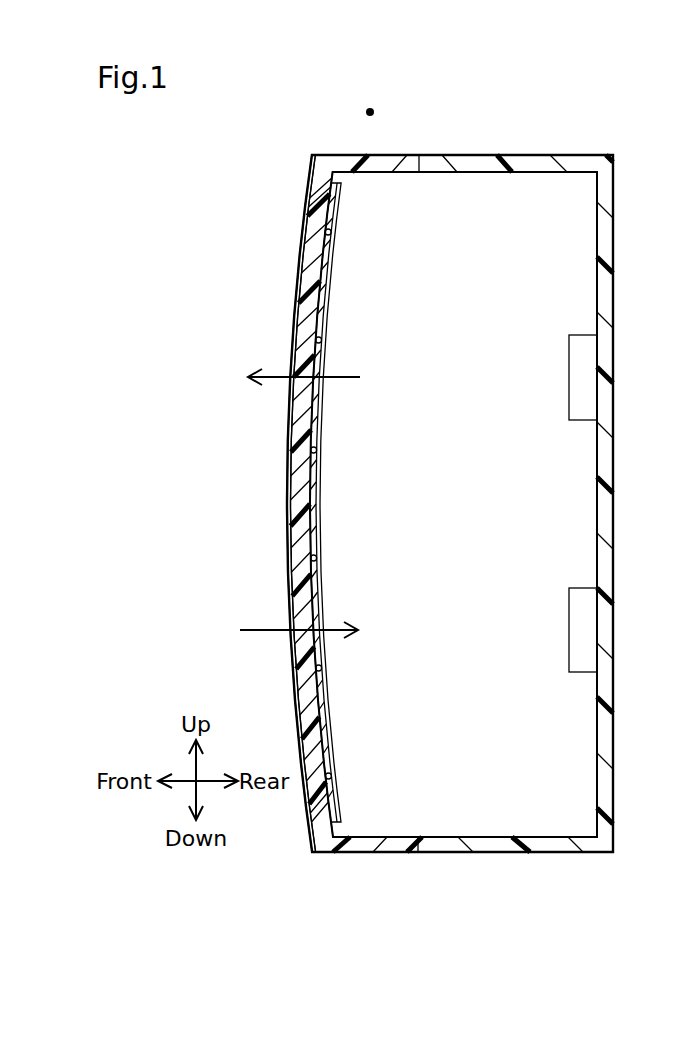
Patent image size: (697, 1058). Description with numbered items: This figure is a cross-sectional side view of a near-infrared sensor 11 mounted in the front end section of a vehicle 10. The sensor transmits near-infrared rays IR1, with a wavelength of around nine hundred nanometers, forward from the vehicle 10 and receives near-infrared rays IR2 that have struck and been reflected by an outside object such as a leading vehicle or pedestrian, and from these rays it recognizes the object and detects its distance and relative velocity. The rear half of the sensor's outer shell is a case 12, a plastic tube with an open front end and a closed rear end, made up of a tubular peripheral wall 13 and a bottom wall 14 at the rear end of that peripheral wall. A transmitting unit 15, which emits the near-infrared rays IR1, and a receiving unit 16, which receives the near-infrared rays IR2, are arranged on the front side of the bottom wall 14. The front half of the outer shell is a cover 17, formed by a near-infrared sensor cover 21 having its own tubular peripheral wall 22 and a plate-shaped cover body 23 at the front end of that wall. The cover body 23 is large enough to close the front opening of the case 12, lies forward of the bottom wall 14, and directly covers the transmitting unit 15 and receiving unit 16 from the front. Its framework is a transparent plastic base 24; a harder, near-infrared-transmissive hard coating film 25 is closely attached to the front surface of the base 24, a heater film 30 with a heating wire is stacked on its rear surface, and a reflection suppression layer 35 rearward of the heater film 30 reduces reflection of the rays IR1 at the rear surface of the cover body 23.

The vehicle 10 is at (370, 112).
The near-infrared sensor 11 is at (444, 505).
The case 12 is at (508, 443).
The peripheral wall 13 is at (568, 165).
The bottom wall 14 is at (629, 463).
The transmitting unit 15 is at (578, 372).
The receiving unit 16 is at (578, 625).
The cover 17 is at (403, 551).
The near-infrared sensor cover 21 is at (403, 551).
The peripheral wall 22 is at (360, 847).
The cover body 23 is at (278, 533).
The base 24 is at (310, 425).
The hard coating film 25 is at (298, 304).
The heater film 30 is at (354, 502).
The reflection suppression layer 35 is at (322, 488).
The near-infrared rays IR1 is at (342, 380).
The near-infrared rays IR2 is at (338, 637).